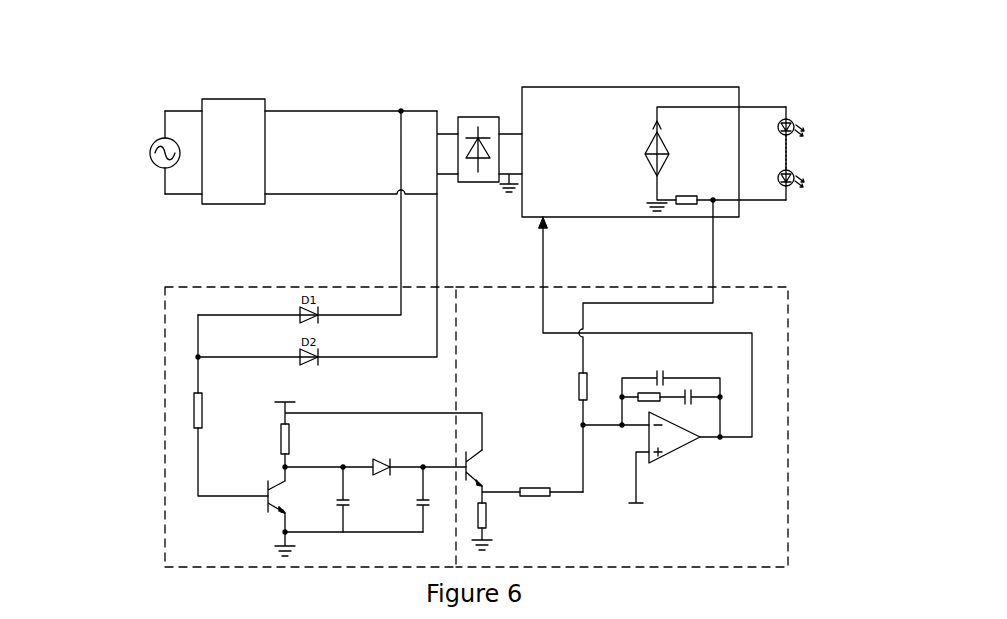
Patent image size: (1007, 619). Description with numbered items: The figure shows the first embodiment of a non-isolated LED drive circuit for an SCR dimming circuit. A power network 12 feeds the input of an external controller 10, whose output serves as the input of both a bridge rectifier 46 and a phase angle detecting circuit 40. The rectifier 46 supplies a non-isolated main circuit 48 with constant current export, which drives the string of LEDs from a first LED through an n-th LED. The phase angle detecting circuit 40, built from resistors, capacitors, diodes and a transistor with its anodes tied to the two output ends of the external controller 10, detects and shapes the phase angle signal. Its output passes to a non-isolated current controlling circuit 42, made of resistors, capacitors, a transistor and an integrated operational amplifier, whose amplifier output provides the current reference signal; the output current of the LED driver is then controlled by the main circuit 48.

The external controller 10 is at (231, 99).
The power network 12 is at (156, 141).
The phase angle detecting circuit 40 is at (161, 288).
The current controlling circuit 42 is at (783, 283).
The rectifier 46 is at (463, 117).
The non-isolated main circuit 48 is at (650, 87).